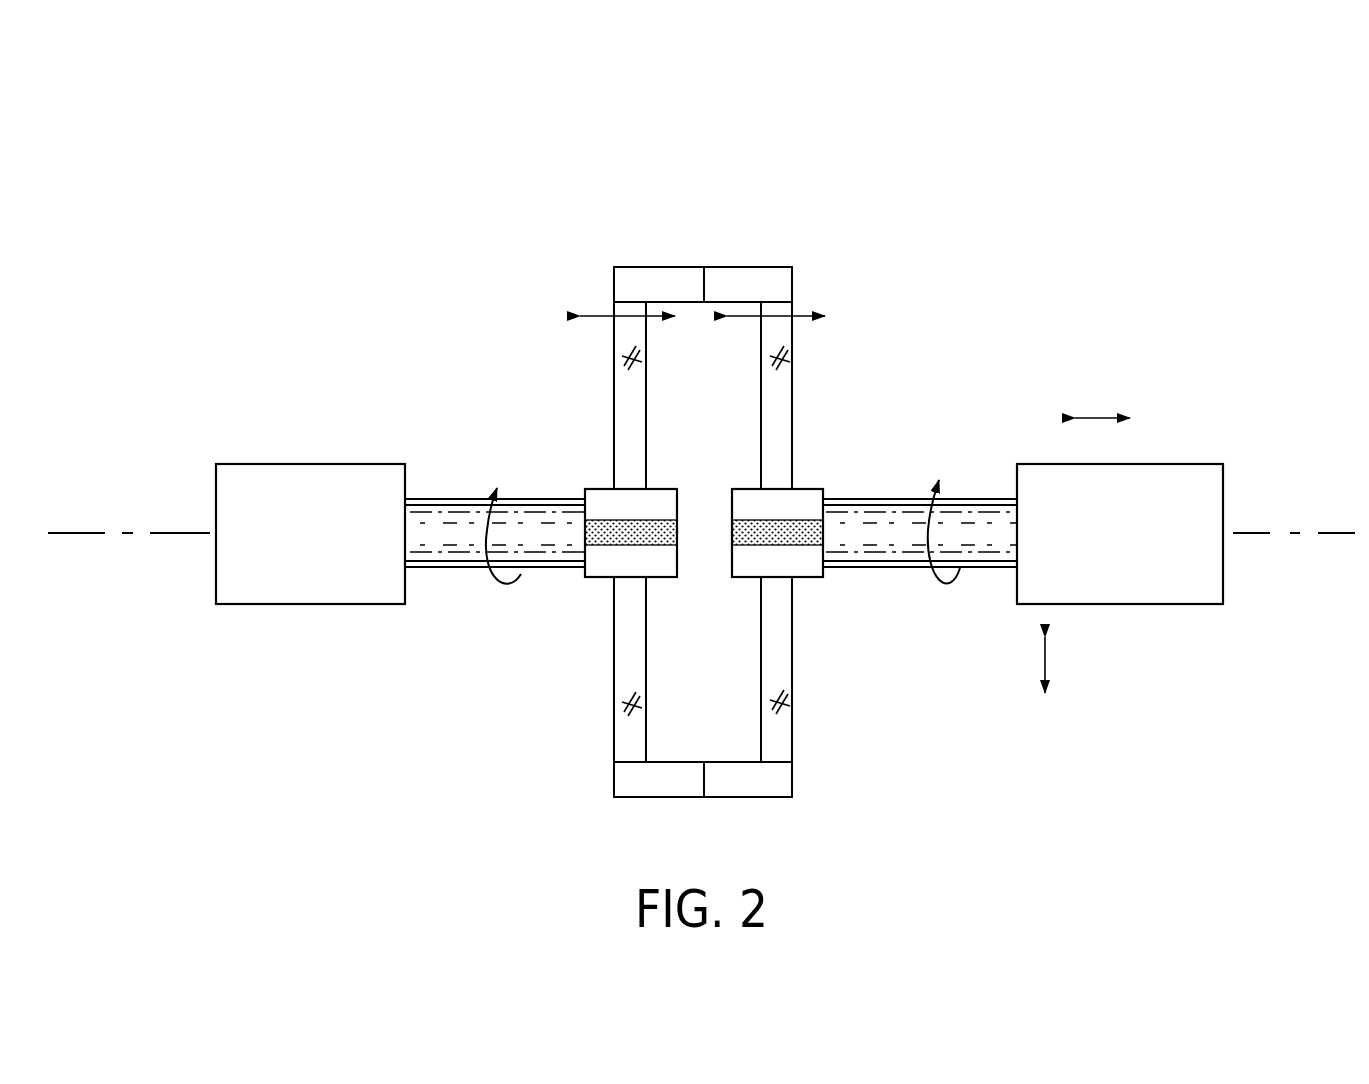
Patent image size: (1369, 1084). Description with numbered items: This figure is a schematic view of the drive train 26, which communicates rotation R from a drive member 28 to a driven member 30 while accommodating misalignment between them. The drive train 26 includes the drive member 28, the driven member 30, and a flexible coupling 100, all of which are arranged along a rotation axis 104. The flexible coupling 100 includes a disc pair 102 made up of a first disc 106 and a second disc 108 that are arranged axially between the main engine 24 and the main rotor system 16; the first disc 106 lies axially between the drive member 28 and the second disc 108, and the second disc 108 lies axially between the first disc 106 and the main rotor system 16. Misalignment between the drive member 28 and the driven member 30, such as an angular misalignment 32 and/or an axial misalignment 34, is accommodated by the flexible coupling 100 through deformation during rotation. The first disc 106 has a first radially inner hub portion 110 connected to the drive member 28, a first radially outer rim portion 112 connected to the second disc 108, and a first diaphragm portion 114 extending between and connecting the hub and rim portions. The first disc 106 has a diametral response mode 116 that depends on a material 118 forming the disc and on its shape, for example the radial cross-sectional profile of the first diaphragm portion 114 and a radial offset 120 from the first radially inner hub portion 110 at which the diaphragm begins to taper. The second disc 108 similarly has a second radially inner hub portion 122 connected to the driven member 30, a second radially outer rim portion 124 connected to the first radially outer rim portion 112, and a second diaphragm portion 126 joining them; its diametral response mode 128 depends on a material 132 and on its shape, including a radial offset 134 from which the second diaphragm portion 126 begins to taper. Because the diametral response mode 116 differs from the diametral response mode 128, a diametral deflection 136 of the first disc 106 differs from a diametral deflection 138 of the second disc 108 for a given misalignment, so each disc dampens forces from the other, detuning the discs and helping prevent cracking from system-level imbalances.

The main rotor system 16 is at (1143, 604).
The main engine 24 is at (302, 604).
The drive train 26 is at (282, 797).
The drive member 28 is at (440, 490).
The driven member 30 is at (873, 489).
The angular misalignment 32 is at (1040, 662).
The axial misalignment 34 is at (1105, 418).
The flexible coupling 100 is at (485, 814).
The disc pair 102 is at (713, 432).
The rotation axis 104 is at (1260, 530).
The first disc 106 is at (635, 256).
The second disc 108 is at (769, 256).
The first radially inner hub portion 110 is at (605, 488).
The first radially outer rim portion 112 is at (614, 283).
The first diaphragm portion 114 is at (647, 433).
The diametral response mode 116 is at (622, 362).
The material 118 is at (622, 704).
The radial offset 120 is at (657, 478).
The second radially inner hub portion 122 is at (808, 488).
The second radially outer rim portion 124 is at (792, 282).
The second diaphragm portion 126 is at (792, 390).
The diametral response mode 128 is at (790, 352).
The material 132 is at (790, 710).
The radial offset 134 is at (808, 592).
The diametral deflection 136 is at (598, 318).
The diametral deflection 138 is at (747, 318).
The rotation R is at (520, 572).